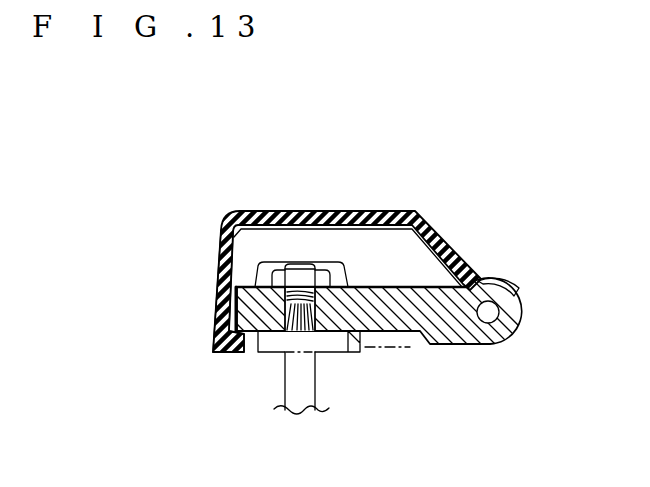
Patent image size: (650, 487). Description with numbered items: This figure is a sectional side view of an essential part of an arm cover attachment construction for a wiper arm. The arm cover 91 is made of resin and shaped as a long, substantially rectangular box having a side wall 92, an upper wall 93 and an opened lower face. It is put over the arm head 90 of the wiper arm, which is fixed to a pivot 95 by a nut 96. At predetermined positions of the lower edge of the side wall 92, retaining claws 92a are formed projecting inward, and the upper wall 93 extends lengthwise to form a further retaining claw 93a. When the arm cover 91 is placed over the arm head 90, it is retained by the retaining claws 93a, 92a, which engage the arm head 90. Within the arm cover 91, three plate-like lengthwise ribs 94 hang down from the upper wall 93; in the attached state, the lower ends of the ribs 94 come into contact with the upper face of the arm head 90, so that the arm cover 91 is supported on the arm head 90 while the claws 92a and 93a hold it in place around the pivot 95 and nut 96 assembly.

The arm head 90 is at (384, 329).
The arm cover 91 is at (249, 200).
The side wall 92 is at (213, 271).
The retaining claw 92a is at (242, 346).
The upper wall 93 is at (320, 211).
The retaining claw 93a is at (503, 276).
The rib 94 is at (370, 241).
The pivot 95 is at (321, 379).
The nut 96 is at (266, 268).